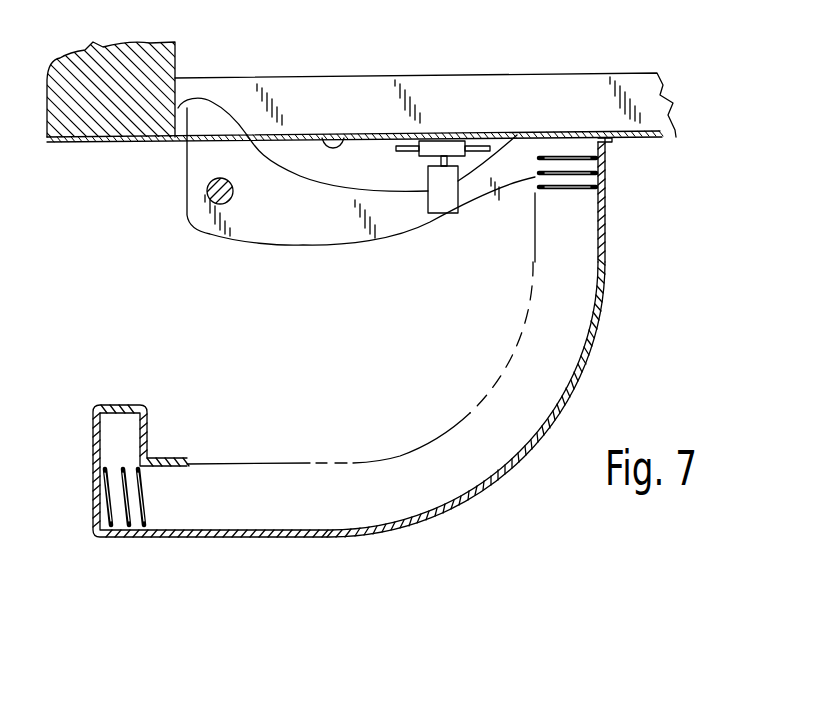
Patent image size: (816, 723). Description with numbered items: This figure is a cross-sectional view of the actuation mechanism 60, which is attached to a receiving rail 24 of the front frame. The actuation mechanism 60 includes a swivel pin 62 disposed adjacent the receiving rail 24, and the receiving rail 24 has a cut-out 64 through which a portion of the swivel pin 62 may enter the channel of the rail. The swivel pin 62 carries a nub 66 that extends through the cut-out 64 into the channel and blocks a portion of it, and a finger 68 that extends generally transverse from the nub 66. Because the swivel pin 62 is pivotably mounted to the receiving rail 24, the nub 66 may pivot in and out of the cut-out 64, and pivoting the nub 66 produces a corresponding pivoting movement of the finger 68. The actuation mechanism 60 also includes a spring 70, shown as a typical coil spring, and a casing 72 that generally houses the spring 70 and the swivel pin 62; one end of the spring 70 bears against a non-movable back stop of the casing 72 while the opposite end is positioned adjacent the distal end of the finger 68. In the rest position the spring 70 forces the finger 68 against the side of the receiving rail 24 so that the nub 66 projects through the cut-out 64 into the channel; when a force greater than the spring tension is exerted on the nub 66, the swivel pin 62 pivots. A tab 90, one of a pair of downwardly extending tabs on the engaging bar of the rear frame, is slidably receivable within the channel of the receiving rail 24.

The tab 90 is at (150, 65).
The cut-out 64 is at (346, 140).
The nub 66 is at (207, 115).
The swivel pin 62 is at (282, 222).
The finger 68 is at (478, 193).
The spring 70 is at (577, 190).
The casing 72 is at (598, 330).
The actuation mechanism 60 is at (502, 493).
The receiving rail 24 is at (98, 477).